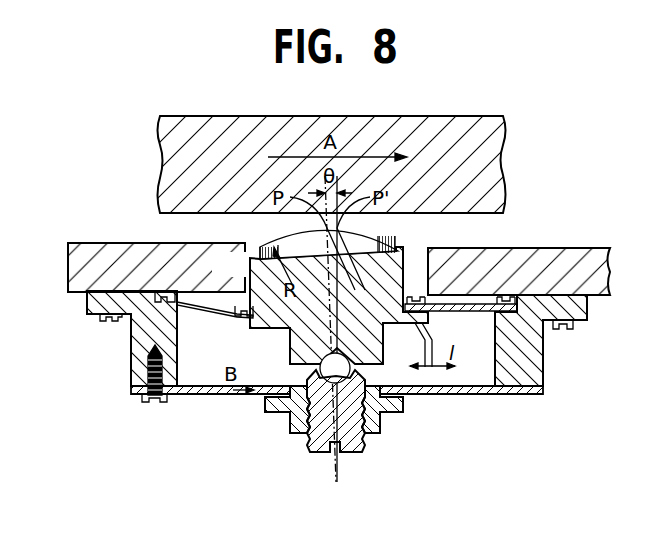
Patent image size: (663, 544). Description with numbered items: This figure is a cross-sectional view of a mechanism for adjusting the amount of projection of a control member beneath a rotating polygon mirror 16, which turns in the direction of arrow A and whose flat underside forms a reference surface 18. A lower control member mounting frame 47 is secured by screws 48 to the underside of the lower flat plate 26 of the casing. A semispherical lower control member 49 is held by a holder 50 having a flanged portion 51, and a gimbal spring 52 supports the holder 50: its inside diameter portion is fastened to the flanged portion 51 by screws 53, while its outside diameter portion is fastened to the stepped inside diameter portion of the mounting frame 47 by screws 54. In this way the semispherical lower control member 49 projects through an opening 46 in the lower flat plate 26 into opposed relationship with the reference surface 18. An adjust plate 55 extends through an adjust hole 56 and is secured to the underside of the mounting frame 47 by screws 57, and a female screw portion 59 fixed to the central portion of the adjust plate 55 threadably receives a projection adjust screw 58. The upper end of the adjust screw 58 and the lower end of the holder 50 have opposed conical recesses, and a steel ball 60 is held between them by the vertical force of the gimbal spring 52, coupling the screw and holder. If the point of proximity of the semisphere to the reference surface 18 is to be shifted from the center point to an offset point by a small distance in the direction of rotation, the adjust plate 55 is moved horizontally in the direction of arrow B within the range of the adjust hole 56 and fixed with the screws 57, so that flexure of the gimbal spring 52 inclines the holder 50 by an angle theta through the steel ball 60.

The polygon mirror 16 is at (492, 162).
The reference surface 18 is at (493, 218).
The lower flat plate 26 is at (100, 255).
The opening 46 is at (413, 263).
The lower control member mounting frame 47 is at (140, 334).
The screws 48 is at (100, 317).
The semispherical lower control member 49 is at (378, 240).
The holder 50 is at (370, 362).
The flanged portion 51 is at (438, 313).
The gimbal spring 52 is at (205, 312).
The screws 53 is at (240, 306).
The screws 54 is at (152, 290).
The adjust plate 55 is at (222, 398).
The adjust hole 56 is at (135, 391).
The screws 57 is at (163, 400).
The projection adjust screw 58 is at (320, 452).
The female screw portion 59 is at (295, 434).
The steel ball 60 is at (345, 355).